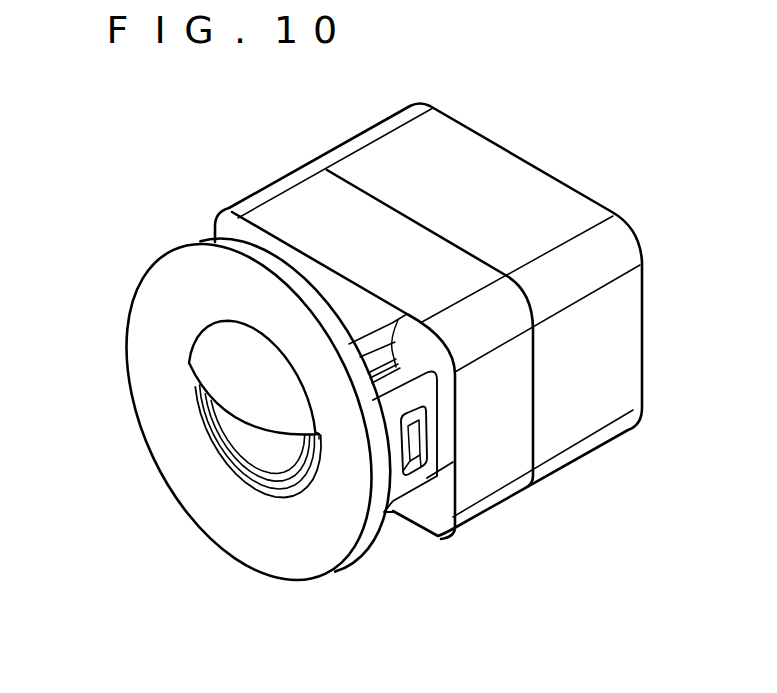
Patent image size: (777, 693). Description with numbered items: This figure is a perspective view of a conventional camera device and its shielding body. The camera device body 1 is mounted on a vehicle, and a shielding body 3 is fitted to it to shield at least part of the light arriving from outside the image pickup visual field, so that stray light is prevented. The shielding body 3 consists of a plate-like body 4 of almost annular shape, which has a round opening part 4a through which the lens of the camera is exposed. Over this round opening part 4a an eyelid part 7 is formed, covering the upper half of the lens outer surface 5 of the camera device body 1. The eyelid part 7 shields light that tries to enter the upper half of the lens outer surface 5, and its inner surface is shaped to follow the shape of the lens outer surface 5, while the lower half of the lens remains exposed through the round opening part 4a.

The camera device body 1 is at (352, 141).
The shielding body 3 is at (225, 425).
The plate-like body 4 is at (320, 558).
The round opening part 4a is at (230, 473).
The lens outer surface 5 is at (253, 447).
The eyelid part 7 is at (220, 340).